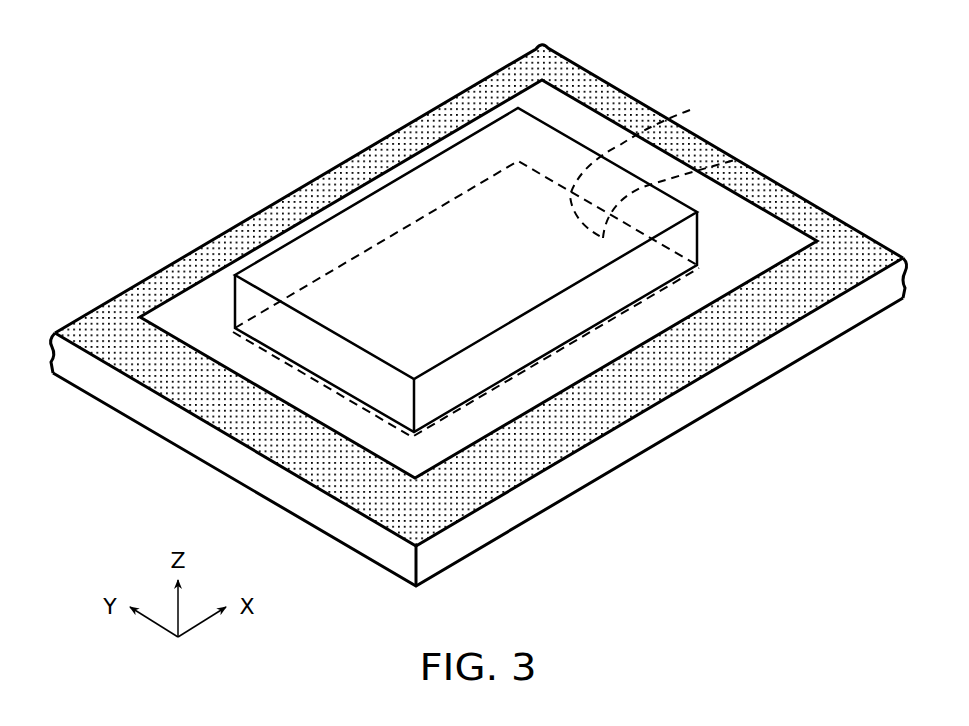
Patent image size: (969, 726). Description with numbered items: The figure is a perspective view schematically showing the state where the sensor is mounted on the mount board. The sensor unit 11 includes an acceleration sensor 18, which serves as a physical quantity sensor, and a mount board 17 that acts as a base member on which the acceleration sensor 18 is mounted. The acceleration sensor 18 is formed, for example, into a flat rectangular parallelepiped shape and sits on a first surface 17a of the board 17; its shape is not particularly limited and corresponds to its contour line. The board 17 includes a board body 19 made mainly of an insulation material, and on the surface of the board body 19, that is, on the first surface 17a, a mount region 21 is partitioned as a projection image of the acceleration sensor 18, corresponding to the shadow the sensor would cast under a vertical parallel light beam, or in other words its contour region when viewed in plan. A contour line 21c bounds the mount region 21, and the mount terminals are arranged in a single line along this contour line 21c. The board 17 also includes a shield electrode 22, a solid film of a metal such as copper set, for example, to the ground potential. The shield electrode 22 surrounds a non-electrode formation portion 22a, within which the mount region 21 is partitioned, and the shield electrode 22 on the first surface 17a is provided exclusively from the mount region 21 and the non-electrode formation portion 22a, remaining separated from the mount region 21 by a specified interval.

The sensor unit 11 is at (479, 298).
The mount board 17 is at (479, 315).
The first surface 17a is at (479, 295).
The acceleration sensor 18 is at (420, 183).
The board body 19 is at (638, 438).
The mount region 21 is at (722, 150).
The contour line 21c is at (673, 118).
The shield electrode 22 is at (540, 447).
The non-electrode formation portion 22a is at (478, 250).